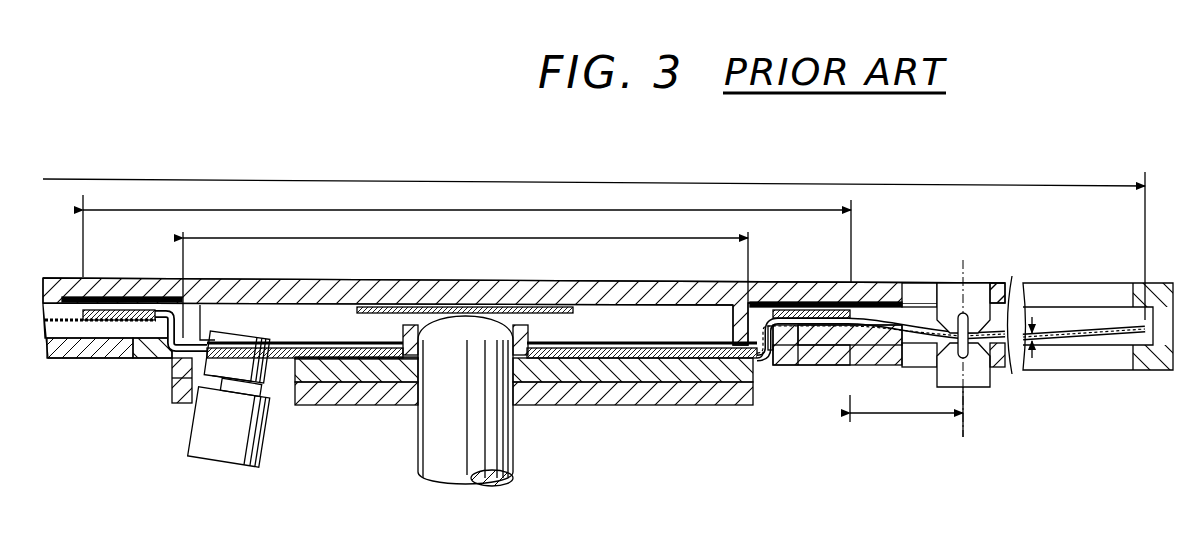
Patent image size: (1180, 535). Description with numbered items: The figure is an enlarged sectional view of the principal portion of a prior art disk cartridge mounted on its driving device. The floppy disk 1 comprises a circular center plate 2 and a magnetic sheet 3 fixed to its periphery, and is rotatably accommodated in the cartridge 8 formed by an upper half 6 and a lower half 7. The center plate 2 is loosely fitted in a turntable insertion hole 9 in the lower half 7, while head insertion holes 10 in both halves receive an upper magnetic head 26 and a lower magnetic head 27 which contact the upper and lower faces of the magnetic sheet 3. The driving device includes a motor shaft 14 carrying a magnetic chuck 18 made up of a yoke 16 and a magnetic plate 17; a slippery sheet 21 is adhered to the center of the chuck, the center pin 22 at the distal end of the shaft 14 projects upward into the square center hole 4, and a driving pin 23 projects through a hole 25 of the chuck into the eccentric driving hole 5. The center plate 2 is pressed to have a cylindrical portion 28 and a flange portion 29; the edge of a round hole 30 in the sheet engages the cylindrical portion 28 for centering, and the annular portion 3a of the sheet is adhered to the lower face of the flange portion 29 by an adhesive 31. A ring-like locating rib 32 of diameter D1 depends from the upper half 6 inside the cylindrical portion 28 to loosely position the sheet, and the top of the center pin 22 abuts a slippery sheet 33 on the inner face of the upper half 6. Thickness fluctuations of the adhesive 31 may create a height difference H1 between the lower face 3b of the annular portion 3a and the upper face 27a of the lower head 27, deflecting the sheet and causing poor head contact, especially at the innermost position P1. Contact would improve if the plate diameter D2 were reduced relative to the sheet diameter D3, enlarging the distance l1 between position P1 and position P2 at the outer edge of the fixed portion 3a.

The floppy disk 1 is at (78, 328).
The circular center plate 2 is at (617, 351).
The magnetic sheet 3 is at (888, 330).
The annular portion 3a is at (825, 338).
The lower face 3b is at (808, 352).
The center hole 4 is at (430, 343).
The eccentric driving hole 5 is at (293, 345).
The upper half 6 is at (772, 293).
The lower half 7 is at (96, 354).
The cartridge 8 is at (1094, 424).
The turntable insertion hole 9 is at (146, 355).
The head insertion holes 10 is at (908, 300).
The motor shaft 14 is at (428, 460).
The yoke 16 is at (672, 380).
The magnetic plate 17 is at (623, 398).
The magnetic chuck 18 is at (178, 418).
The slippery sheet 21 is at (356, 360).
The center pin 22 is at (432, 326).
The driving pin 23 is at (224, 342).
The hole 25 is at (292, 400).
The upper magnetic head 26 is at (977, 294).
The lower magnetic head 27 is at (974, 372).
The upper face 27a is at (974, 349).
The cylindrical portion 28 is at (764, 350).
The flange portion 29 is at (110, 307).
The round hole 30 is at (774, 345).
The adhesive 31 is at (790, 302).
The locating rib 32 is at (736, 335).
The slippery sheet 33 is at (556, 315).
The diameter of locating rib D1 is at (440, 236).
The diameter of circular center plate D2 is at (366, 208).
The diameter of magnetic sheet D3 is at (706, 184).
The height difference H1 is at (1040, 346).
The innermost head position P1 is at (965, 405).
The outer edge position P2 is at (850, 423).
The distance l1 is at (910, 418).